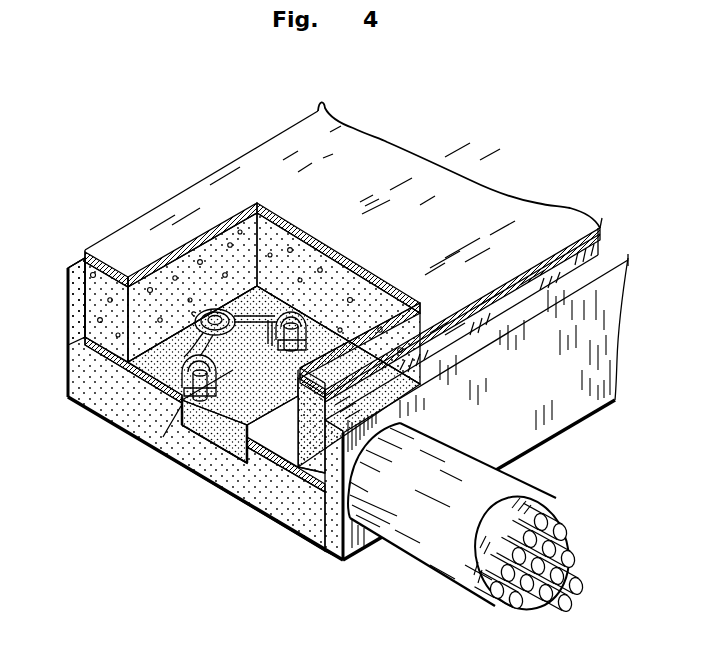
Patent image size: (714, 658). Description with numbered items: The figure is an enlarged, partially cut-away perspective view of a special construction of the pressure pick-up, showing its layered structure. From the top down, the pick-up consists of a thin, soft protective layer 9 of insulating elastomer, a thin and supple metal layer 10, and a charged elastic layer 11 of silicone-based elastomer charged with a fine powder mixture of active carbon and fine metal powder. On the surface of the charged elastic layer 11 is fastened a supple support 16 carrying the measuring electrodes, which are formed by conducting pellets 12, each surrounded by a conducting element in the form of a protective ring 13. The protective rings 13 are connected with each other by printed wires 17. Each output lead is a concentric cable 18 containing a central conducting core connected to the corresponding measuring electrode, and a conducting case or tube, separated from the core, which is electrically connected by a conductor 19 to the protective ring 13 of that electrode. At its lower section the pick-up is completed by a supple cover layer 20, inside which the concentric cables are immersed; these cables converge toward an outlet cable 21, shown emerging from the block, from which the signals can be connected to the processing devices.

The protective layer 9 is at (172, 207).
The thin metal layer 10 is at (83, 252).
The charged elastic layer 11 is at (72, 300).
The conducting pellet 12 is at (186, 378).
The protective ring 13 is at (214, 317).
The supple support 16 is at (72, 340).
The printed wire 17 is at (263, 305).
The concentric cable 18 is at (228, 450).
The conductor 19 is at (163, 440).
The supple cover layer 20 is at (72, 382).
The outlet cable 21 is at (564, 512).